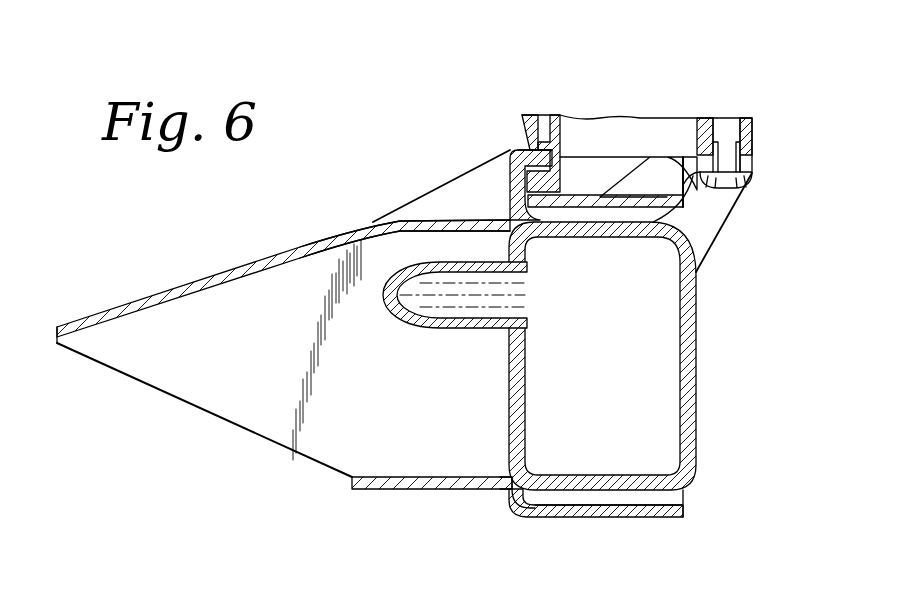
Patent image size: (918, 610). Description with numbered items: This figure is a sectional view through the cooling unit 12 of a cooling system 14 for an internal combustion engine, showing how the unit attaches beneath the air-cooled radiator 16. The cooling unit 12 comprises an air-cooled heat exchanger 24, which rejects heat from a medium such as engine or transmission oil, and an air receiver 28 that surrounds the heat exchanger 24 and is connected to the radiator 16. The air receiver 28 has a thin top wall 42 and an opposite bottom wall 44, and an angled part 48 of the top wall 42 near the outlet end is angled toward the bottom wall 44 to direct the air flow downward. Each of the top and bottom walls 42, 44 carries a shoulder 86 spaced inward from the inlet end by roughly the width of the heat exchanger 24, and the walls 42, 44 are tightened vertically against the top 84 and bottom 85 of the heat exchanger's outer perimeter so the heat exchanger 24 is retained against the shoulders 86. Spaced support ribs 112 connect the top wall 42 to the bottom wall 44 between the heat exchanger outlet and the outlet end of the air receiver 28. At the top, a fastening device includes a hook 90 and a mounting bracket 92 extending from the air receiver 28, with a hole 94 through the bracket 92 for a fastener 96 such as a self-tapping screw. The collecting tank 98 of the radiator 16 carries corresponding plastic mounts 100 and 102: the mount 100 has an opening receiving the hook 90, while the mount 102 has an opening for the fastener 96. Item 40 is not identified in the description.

The cooling unit 12 is at (722, 340).
The cooling system 14 is at (657, 108).
The radiator 16 is at (630, 117).
The heat exchanger 24 is at (580, 460).
The air receiver 28 is at (510, 505).
The bottom plate 40 is at (412, 462).
The top wall 42 is at (457, 225).
The bottom wall 44 is at (490, 498).
The angled part 48 is at (185, 287).
The top of the outer perimeter 84 is at (650, 203).
The bottom of the outer perimeter 85 is at (625, 492).
The shoulder 86 is at (467, 225).
The hook 90 is at (516, 150).
The mounting bracket 92 is at (752, 167).
The hole 94 is at (693, 174).
The fastener 96 is at (740, 117).
The collecting tank 98 is at (573, 115).
The mount 100 is at (563, 157).
The mount 102 is at (728, 117).
The support ribs 112 is at (447, 345).